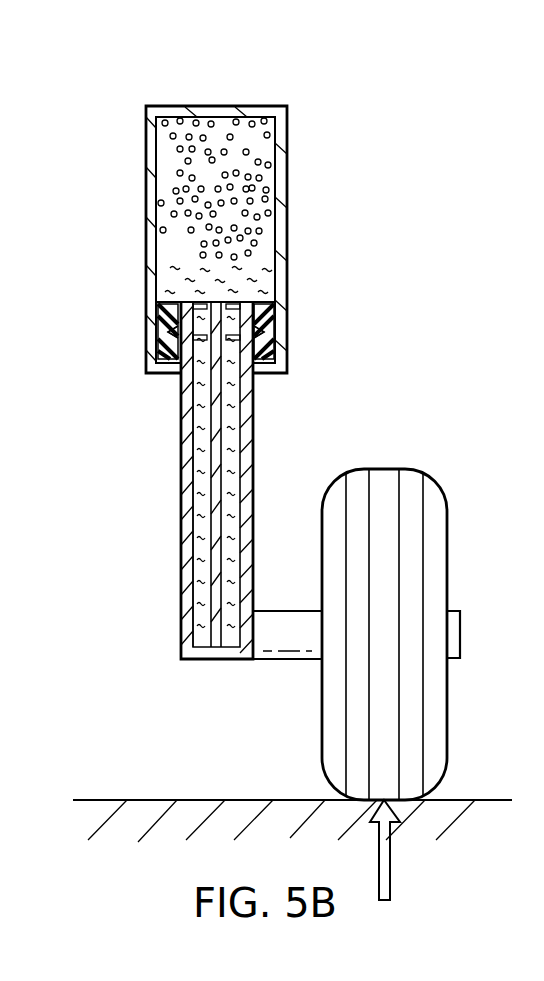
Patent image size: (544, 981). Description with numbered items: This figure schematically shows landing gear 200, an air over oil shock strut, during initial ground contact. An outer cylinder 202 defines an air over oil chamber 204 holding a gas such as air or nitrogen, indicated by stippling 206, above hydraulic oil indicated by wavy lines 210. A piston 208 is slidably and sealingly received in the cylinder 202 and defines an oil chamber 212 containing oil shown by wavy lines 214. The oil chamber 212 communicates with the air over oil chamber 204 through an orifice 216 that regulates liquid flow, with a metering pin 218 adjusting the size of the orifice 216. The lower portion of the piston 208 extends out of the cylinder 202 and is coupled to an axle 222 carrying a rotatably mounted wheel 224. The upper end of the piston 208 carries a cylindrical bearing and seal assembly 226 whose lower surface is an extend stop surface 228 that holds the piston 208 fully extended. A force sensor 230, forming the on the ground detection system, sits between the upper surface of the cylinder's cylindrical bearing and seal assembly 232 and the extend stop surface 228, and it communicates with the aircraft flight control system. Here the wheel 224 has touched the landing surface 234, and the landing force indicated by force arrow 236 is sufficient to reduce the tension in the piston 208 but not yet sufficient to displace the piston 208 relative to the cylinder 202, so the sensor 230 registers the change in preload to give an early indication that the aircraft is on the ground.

The landing gear 200 is at (355, 92).
The outer cylinder 202 is at (282, 225).
The air over oil chamber 204 is at (268, 172).
The stippling 206 is at (203, 130).
The piston 208 is at (183, 600).
The wavy lines 210 is at (170, 287).
The oil chamber 212 is at (198, 553).
The wavy lines 214 is at (203, 497).
The orifice 216 is at (172, 372).
The metering pin 218 is at (217, 448).
The axle 222 is at (287, 659).
The wheel 224 is at (447, 697).
The cylindrical bearing and seal assembly 226 is at (160, 308).
The extend stop surface 228 is at (160, 332).
The force sensor 230 is at (270, 330).
The cylindrical bearing and seal assembly 232 is at (267, 357).
The landing surface 234 is at (197, 800).
The force arrow 236 is at (390, 862).